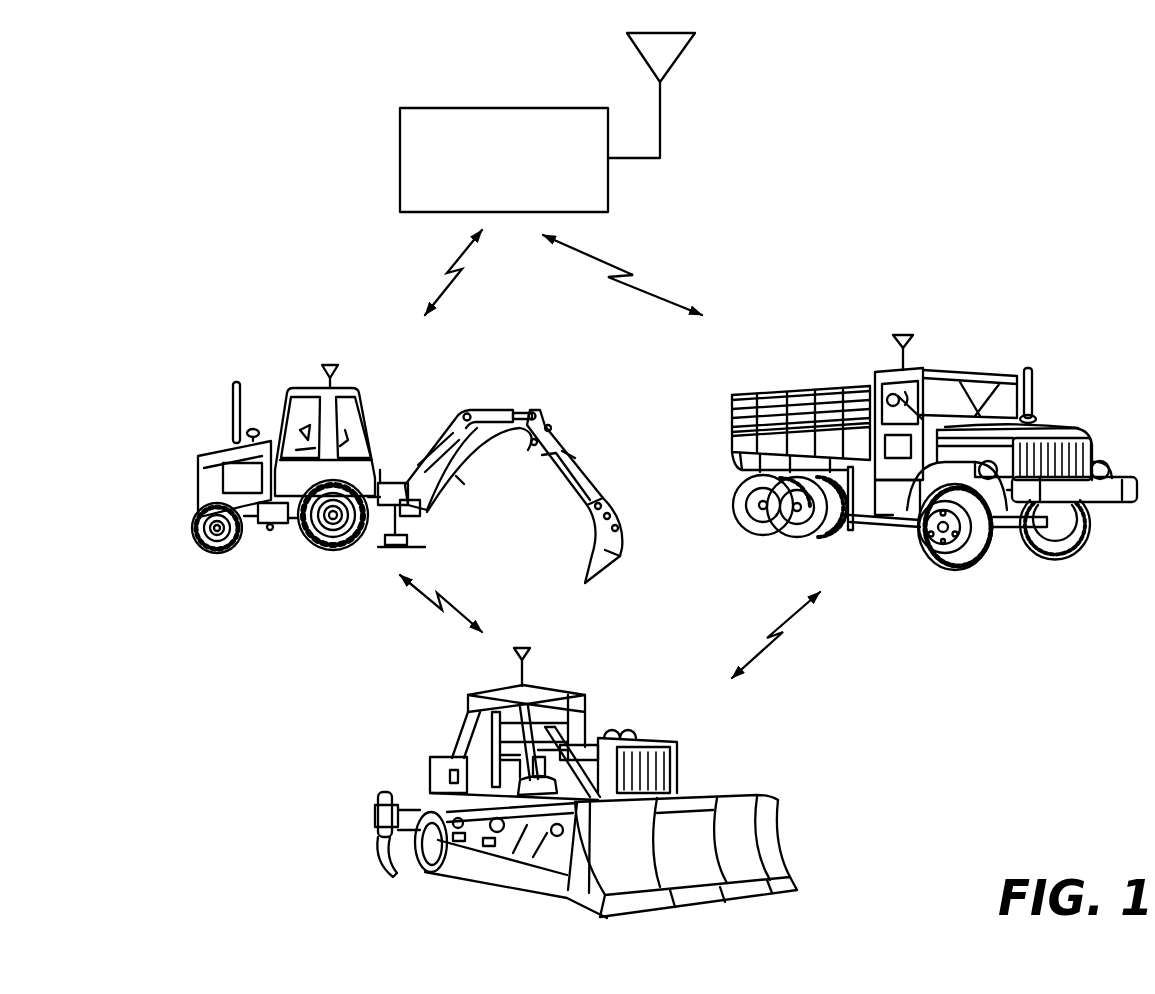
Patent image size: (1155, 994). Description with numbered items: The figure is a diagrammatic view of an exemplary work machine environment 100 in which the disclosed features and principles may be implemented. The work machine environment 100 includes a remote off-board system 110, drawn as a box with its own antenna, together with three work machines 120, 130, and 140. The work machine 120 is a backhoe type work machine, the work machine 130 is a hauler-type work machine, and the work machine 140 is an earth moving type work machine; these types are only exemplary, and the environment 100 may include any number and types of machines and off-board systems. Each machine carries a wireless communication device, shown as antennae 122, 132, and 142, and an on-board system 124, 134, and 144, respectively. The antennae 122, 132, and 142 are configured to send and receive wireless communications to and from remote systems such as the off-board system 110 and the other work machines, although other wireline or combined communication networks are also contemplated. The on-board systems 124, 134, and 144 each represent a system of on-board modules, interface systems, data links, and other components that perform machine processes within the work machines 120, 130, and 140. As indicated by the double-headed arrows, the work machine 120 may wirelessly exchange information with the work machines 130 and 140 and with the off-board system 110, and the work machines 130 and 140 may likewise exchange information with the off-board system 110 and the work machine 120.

The work machine environment 100 is at (1103, 658).
The remote off-board system 110 is at (524, 171).
The work machine 120 is at (345, 447).
The antenna 122 is at (333, 362).
The on-board system 124 is at (240, 476).
The work machine 130 is at (898, 435).
The antenna 132 is at (914, 323).
The on-board system 134 is at (896, 464).
The work machine 140 is at (548, 783).
The antenna 142 is at (535, 651).
The on-board system 144 is at (457, 756).